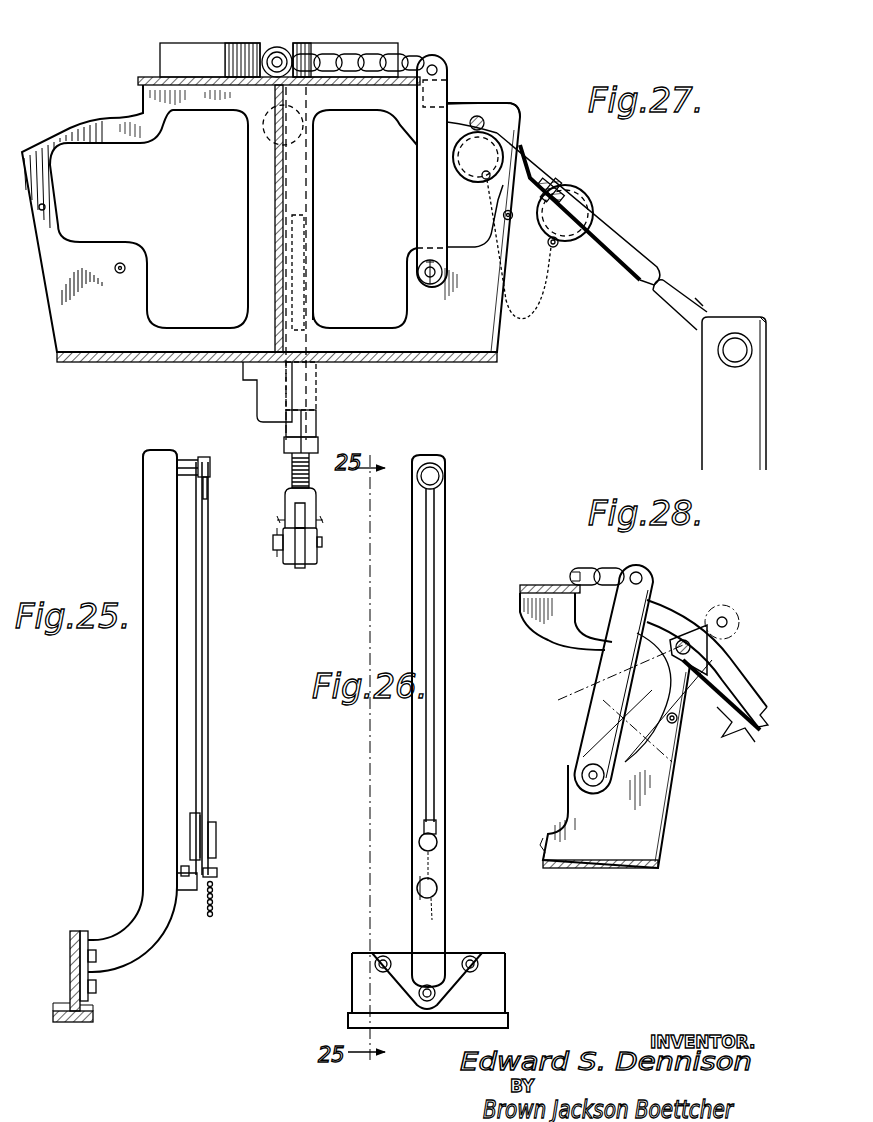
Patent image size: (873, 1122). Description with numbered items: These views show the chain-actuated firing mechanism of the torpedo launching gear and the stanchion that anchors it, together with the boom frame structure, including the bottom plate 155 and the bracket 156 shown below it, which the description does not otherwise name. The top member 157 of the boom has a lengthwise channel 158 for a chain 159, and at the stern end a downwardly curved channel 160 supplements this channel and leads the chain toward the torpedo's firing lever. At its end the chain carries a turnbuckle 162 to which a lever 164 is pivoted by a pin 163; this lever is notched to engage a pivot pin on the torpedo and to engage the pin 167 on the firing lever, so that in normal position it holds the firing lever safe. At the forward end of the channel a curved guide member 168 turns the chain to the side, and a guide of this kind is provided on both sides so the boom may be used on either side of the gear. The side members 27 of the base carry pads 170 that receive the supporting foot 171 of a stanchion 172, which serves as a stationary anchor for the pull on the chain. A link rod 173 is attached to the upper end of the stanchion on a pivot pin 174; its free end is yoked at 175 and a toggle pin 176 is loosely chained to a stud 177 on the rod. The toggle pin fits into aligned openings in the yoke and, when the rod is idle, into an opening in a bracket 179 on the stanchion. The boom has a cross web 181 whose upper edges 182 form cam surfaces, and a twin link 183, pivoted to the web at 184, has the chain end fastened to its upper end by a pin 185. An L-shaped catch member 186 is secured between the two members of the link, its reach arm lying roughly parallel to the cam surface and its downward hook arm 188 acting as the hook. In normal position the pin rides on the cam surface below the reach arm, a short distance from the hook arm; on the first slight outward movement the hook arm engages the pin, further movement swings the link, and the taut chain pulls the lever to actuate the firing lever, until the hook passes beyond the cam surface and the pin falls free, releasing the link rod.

In FIG. 25, the side member of the base 27 is at (72, 965).
In FIG. 26, the side member of the base 27 is at (490, 986).
In FIG. 27, the bottom plate of frame 155 is at (135, 362).
In FIG. 28, the bottom plate of frame 155 is at (595, 869).
In FIG. 27, the bracket 156 is at (268, 402).
In FIG. 27, the top member of the boom 157 is at (148, 79).
In FIG. 28, the top member of the boom 157 is at (540, 584).
In FIG. 27, the lengthwise channel 158 is at (273, 46).
In FIG. 27, the chain 159 is at (352, 60).
In FIG. 28, the chain 159 is at (594, 570).
In FIG. 27, the downwardly curved channel 160 is at (316, 190).
In FIG. 27, the turnbuckle 162 is at (318, 428).
In FIG. 27, the pin 163 is at (313, 520).
In FIG. 27, the lever 164 is at (300, 562).
In FIG. 27, the pin on the firing lever 167 is at (276, 548).
In FIG. 27, the curved guide member 168 is at (192, 52).
In FIG. 25, the pad 170 is at (75, 940).
In FIG. 25, the supporting foot 171 is at (92, 965).
In FIG. 26, the supporting foot 171 is at (462, 955).
In FIG. 27, the stanchion 172 is at (712, 436).
In FIG. 25, the stanchion 172 is at (146, 538).
In FIG. 26, the stanchion 172 is at (447, 688).
In FIG. 27, the link rod 173 is at (602, 235).
In FIG. 25, the link rod 173 is at (206, 712).
In FIG. 26, the link rod 173 is at (437, 640).
In FIG. 28, the link rod 173 is at (721, 708).
In FIG. 27, the pivot pin 174 is at (725, 355).
In FIG. 25, the pivot pin 174 is at (212, 465).
In FIG. 26, the pivot pin 174 is at (445, 477).
In FIG. 25, the yoke 175 is at (214, 850).
In FIG. 26, the yoke 175 is at (440, 857).
In FIG. 27, the toggle pin 176 is at (480, 120).
In FIG. 25, the toggle pin 176 is at (218, 875).
In FIG. 26, the toggle pin 176 is at (440, 882).
In FIG. 28, the toggle pin 176 is at (705, 622).
In FIG. 25, the stud 177 is at (210, 815).
In FIG. 26, the stud 177 is at (438, 822).
In FIG. 25, the bracket 179 is at (185, 894).
In FIG. 26, the bracket 179 is at (420, 897).
In FIG. 27, the cross web 181 is at (138, 280).
In FIG. 28, the cross web 181 is at (658, 796).
In FIG. 27, the cam surface 182 is at (50, 142).
In FIG. 27, the twin link 183 is at (420, 185).
In FIG. 28, the twin link 183 is at (592, 700).
In FIG. 27, the pivot 184 is at (425, 273).
In FIG. 28, the pivot 184 is at (582, 773).
In FIG. 27, the pin 185 is at (436, 66).
In FIG. 28, the pin 185 is at (641, 576).
In FIG. 27, the L-shaped catch member 186 is at (470, 97).
In FIG. 28, the L-shaped catch member 186 is at (670, 612).
In FIG. 27, the hook arm 188 is at (518, 142).
In FIG. 28, the hook arm 188 is at (700, 655).